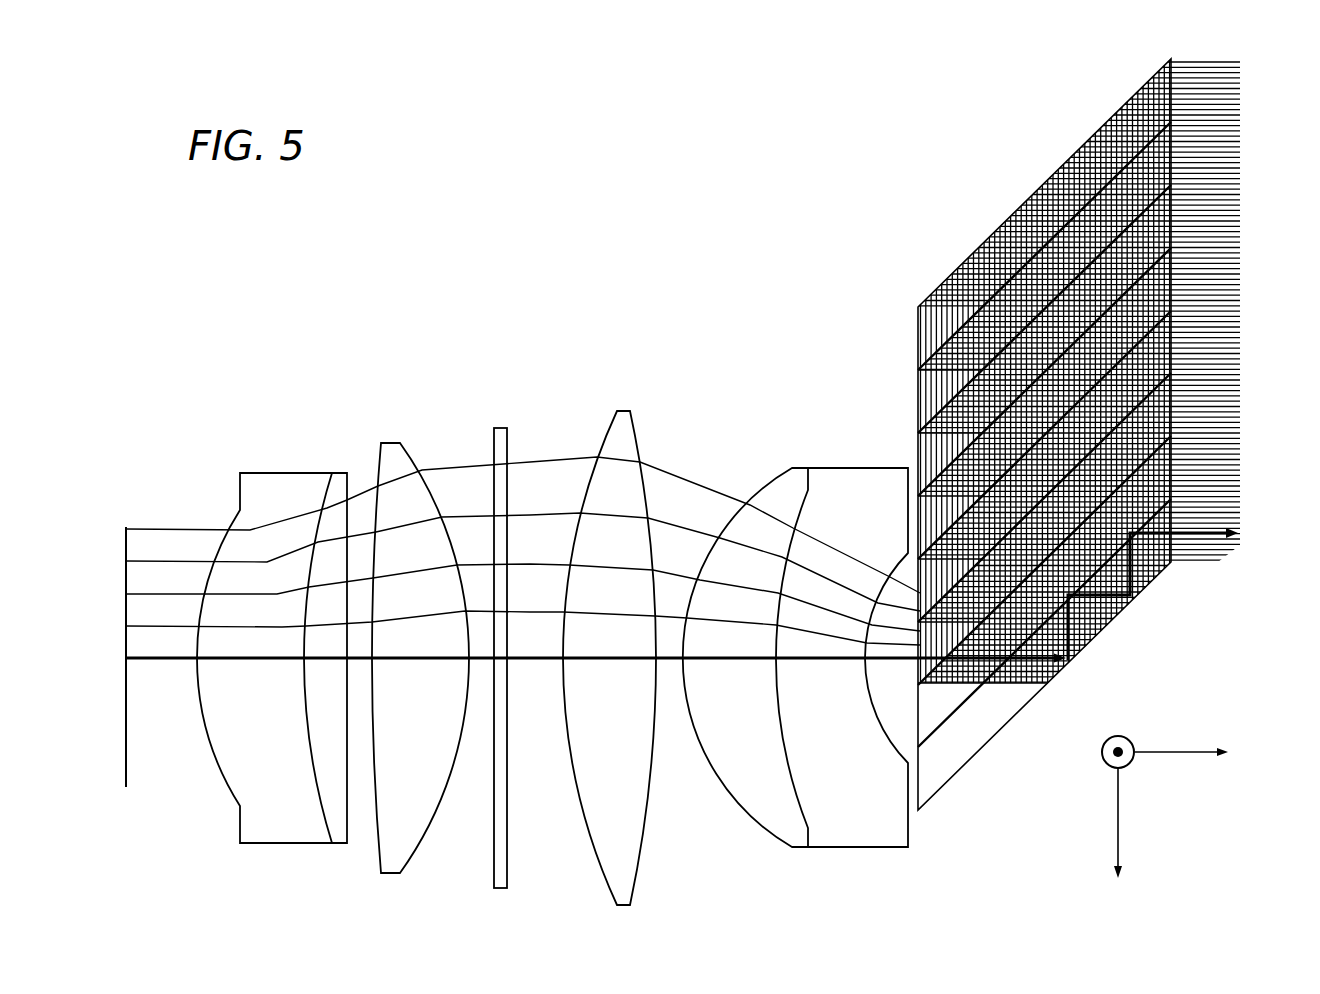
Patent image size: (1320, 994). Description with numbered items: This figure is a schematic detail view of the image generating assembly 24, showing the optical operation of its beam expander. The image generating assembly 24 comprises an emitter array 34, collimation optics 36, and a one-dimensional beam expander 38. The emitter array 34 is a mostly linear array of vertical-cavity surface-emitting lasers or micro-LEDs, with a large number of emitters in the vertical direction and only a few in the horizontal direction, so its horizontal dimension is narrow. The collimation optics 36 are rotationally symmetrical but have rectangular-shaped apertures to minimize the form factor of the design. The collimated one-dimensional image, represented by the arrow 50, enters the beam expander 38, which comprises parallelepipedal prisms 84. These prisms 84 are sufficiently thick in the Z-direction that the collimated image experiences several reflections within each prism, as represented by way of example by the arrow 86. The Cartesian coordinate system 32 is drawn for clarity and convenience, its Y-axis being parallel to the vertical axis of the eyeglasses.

The image generating assembly 24 is at (627, 126).
The collimation optics 36 is at (342, 396).
The arrow representing collimated 1D image 50 is at (610, 662).
The 1D beam expander 38 is at (988, 250).
The parallelepipedal prisms 84 is at (1070, 250).
The arrow representing reflections 86 is at (1182, 524).
The emitter array 34 is at (125, 737).
The Cartesian coordinate system 32 is at (1190, 812).